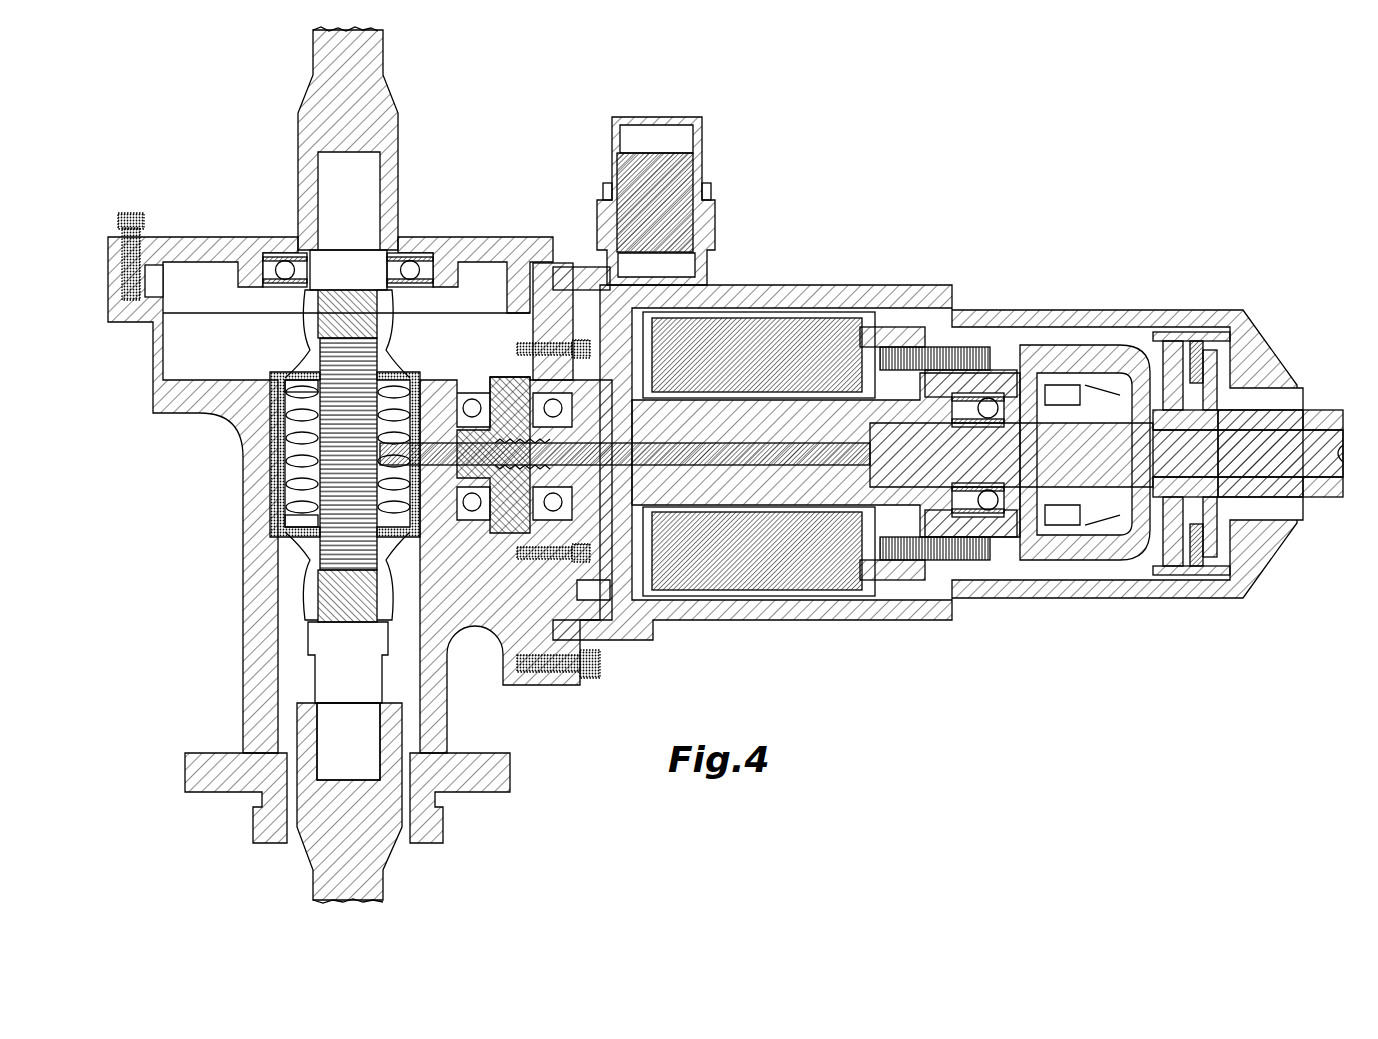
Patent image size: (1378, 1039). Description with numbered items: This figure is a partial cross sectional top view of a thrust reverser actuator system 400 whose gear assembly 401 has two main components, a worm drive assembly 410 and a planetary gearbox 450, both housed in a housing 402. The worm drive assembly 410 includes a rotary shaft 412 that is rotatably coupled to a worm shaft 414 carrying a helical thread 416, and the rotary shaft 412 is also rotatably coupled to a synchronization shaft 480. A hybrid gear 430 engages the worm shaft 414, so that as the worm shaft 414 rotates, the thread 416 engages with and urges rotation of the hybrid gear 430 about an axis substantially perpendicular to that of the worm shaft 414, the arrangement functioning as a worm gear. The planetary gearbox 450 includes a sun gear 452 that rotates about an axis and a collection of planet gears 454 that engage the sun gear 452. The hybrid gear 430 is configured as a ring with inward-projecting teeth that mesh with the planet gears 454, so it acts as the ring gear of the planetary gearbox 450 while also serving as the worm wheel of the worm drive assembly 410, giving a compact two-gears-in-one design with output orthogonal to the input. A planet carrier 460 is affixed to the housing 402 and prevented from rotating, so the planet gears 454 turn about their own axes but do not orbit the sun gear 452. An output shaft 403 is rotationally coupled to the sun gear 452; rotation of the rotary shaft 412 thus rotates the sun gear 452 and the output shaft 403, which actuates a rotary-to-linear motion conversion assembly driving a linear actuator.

The thrust reverser actuator system 400 is at (940, 238).
The gear assembly 401 is at (236, 545).
The housing 402 is at (185, 770).
The output shaft 403 is at (492, 440).
The worm drive assembly 410 is at (312, 682).
The rotary shaft 412 is at (330, 188).
The worm shaft 414 is at (404, 506).
The helical thread 416 is at (287, 517).
The hybrid gear 430 is at (318, 318).
The planetary gearbox 450 is at (393, 348).
The sun gear 452 is at (300, 468).
The planet gears 454 is at (288, 395).
The planet carrier 460 is at (300, 376).
The synchronization shaft 480 is at (310, 868).